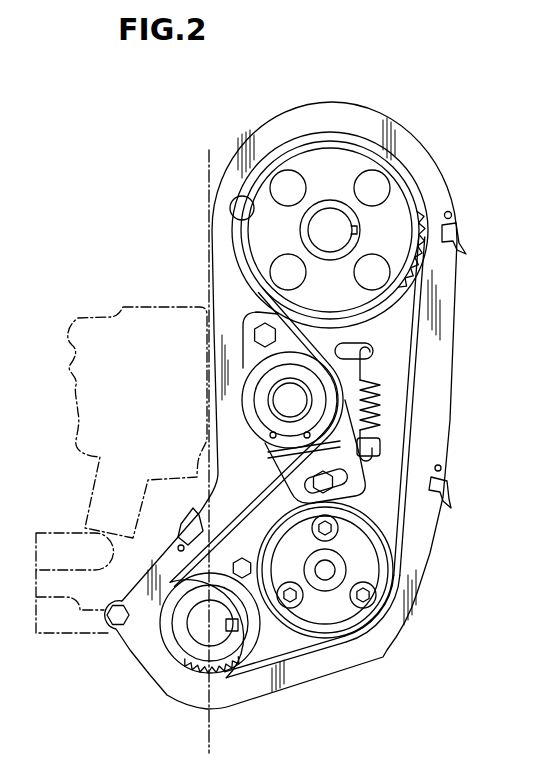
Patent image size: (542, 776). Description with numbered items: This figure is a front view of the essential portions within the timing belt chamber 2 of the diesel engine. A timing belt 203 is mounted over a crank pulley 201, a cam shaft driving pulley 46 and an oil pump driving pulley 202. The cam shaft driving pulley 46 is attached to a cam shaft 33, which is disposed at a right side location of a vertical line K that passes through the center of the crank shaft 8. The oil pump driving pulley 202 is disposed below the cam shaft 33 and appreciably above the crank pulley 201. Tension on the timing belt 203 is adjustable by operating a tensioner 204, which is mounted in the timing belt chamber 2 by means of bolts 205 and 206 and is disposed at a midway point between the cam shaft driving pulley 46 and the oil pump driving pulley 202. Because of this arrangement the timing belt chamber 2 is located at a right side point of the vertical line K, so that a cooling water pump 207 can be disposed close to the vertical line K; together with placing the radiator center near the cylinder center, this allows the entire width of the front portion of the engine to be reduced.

The timing belt chamber 2 is at (268, 132).
The cam shaft 33 is at (330, 215).
The cam shaft driving pulley 46 is at (267, 200).
The crank shaft 8 is at (198, 643).
The crank pulley 201 is at (173, 650).
The oil pump driving pulley 202 is at (365, 566).
The timing belt 203 is at (400, 533).
The tensioner 204 is at (320, 407).
The bolt 205 is at (262, 327).
The bolt 206 is at (333, 490).
The cooling water pump 207 is at (74, 396).
The vertical line K is at (212, 727).